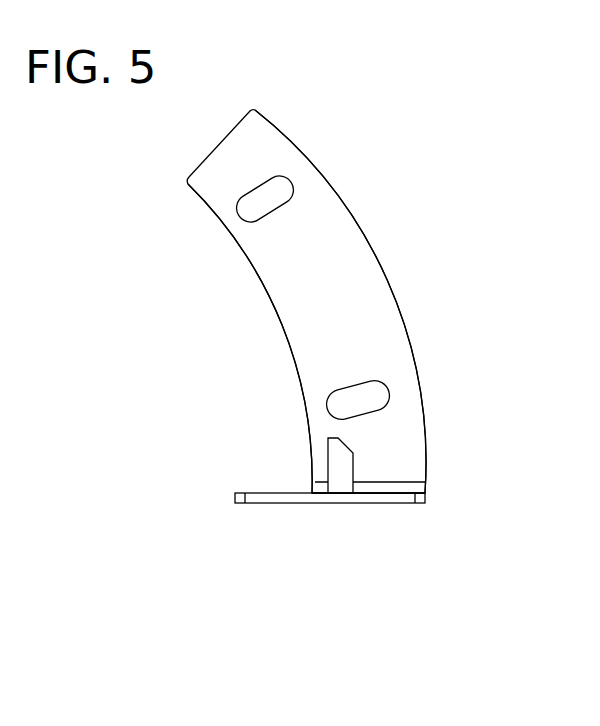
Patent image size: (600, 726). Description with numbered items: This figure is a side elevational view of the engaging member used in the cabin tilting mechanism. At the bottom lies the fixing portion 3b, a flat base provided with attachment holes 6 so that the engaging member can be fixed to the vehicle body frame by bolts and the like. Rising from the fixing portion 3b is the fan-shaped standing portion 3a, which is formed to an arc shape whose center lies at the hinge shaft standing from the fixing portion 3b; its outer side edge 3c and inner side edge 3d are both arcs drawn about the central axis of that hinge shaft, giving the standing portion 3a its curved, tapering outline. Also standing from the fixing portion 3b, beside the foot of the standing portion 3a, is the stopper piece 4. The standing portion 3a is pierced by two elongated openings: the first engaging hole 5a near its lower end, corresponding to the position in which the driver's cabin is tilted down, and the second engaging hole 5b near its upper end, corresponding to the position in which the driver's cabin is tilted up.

The standing portion 3a is at (350, 280).
The fixing portion 3b is at (320, 497).
The outer side edge 3c is at (343, 197).
The inner side edge 3d is at (272, 300).
The stopper piece 4 is at (340, 468).
The first engaging hole 5a is at (355, 398).
The second engaging hole 5b is at (263, 198).
The attachment holes 6 is at (262, 497).